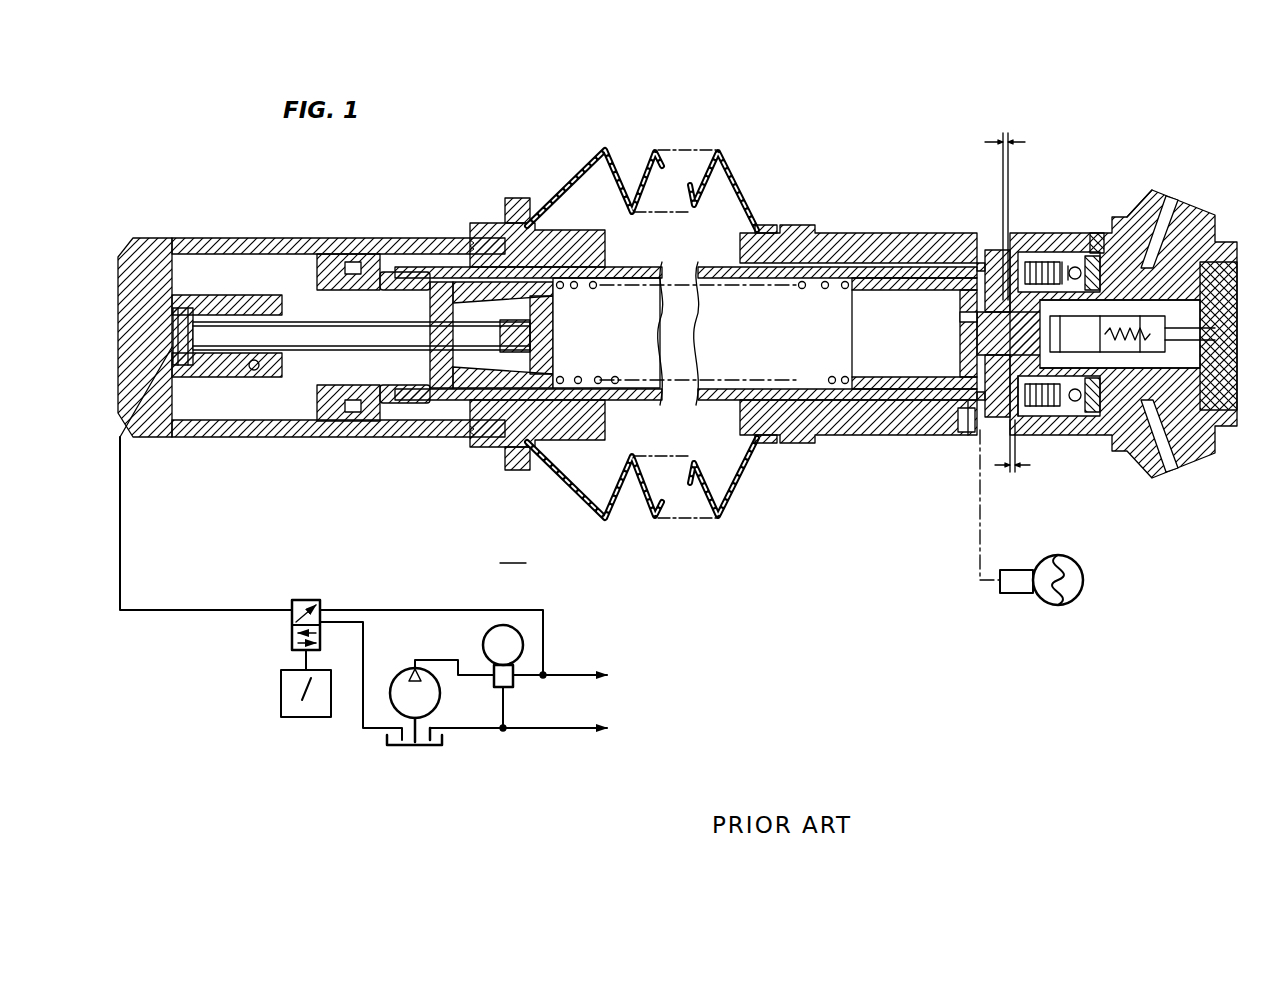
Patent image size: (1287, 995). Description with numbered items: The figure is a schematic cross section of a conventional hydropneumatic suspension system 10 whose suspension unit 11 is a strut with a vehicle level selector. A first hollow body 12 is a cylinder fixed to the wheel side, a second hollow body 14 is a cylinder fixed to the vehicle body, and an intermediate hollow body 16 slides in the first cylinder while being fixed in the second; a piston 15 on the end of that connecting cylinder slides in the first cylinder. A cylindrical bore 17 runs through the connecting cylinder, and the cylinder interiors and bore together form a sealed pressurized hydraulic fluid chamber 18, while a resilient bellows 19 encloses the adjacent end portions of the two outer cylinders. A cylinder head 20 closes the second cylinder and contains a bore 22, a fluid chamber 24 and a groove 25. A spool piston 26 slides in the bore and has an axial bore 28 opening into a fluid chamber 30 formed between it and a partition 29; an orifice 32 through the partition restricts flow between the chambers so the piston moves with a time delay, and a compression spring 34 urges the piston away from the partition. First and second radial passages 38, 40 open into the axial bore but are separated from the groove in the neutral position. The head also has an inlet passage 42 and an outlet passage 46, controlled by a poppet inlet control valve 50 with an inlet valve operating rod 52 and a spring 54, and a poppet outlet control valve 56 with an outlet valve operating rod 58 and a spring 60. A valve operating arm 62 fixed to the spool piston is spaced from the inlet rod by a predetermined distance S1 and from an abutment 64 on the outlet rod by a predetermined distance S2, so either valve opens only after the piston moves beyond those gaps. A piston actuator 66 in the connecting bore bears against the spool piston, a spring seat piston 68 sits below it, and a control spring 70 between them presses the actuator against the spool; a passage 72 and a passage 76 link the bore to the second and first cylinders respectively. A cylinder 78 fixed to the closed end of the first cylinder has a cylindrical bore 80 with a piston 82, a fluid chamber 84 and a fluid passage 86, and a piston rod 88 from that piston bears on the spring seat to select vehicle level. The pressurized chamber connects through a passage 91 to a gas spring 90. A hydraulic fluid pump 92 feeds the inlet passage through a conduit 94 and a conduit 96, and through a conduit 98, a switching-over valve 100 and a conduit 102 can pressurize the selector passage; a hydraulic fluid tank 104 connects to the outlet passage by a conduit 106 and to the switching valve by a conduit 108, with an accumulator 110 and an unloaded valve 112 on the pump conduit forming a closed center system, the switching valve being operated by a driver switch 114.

The hydropneumatic suspension system 10 is at (514, 551).
The hydropneumatic suspension unit 11 is at (782, 224).
The first hollow body 12 is at (370, 437).
The second hollow body 14 is at (857, 436).
The piston 15 is at (365, 262).
The intermediate hollow body 16 is at (645, 400).
The cylindrical bore 17 is at (770, 286).
The pressurized hydraulic fluid chamber 18 is at (700, 332).
The resilient bellows 19 is at (726, 160).
The cylinder head 20 is at (1115, 225).
The bore 22 is at (1092, 414).
The fluid chamber 24 is at (1207, 430).
The groove 25 is at (1097, 248).
The spool piston 26 is at (958, 422).
The axial bore 28 is at (1140, 320).
The partition 29 is at (1178, 345).
The fluid chamber 30 is at (1150, 355).
The orifice 32 is at (1170, 330).
The compression spring 34 is at (962, 318).
The first radial passage 38 is at (1060, 262).
The second radial passage 40 is at (1148, 222).
The inlet passage 42 is at (1160, 460).
The outlet passage 46 is at (1172, 212).
The inlet control valve 50 is at (1040, 416).
The inlet valve operating rod 52 is at (1020, 432).
The spring 54 is at (1077, 402).
The outlet control valve 56 is at (1088, 255).
The outlet valve operating rod 58 is at (1030, 262).
The spring 60 is at (1075, 266).
The valve operating arm 62 is at (978, 262).
The abutment 64 is at (992, 258).
The piston actuator 66 is at (980, 334).
The spring seat piston 68 is at (548, 330).
The control spring 70 is at (836, 377).
The passage 72 is at (960, 358).
The passage 76 is at (552, 356).
The cylinder 78 is at (228, 362).
The cylindrical bore 80 is at (257, 372).
The piston 82 is at (205, 308).
The fluid chamber 84 is at (160, 255).
The fluid passage 86 is at (135, 432).
The piston rod 88 is at (350, 325).
The gas spring 90 is at (1084, 580).
The passage 91 is at (965, 437).
The hydraulic fluid pump 92 is at (398, 673).
The conduit 94 is at (462, 676).
The conduit 96 is at (575, 673).
The conduit 98 is at (415, 608).
The switching-over valve 100 is at (300, 598).
The conduit 102 is at (212, 608).
The hydraulic fluid tank 104 is at (390, 745).
The conduit 106 is at (522, 729).
The conduit 108 is at (360, 716).
The accumulator 110 is at (483, 637).
The unloaded valve 112 is at (514, 680).
The switch 114 is at (281, 692).
The predetermined distance S1 is at (1012, 461).
The predetermined distance S2 is at (1005, 203).